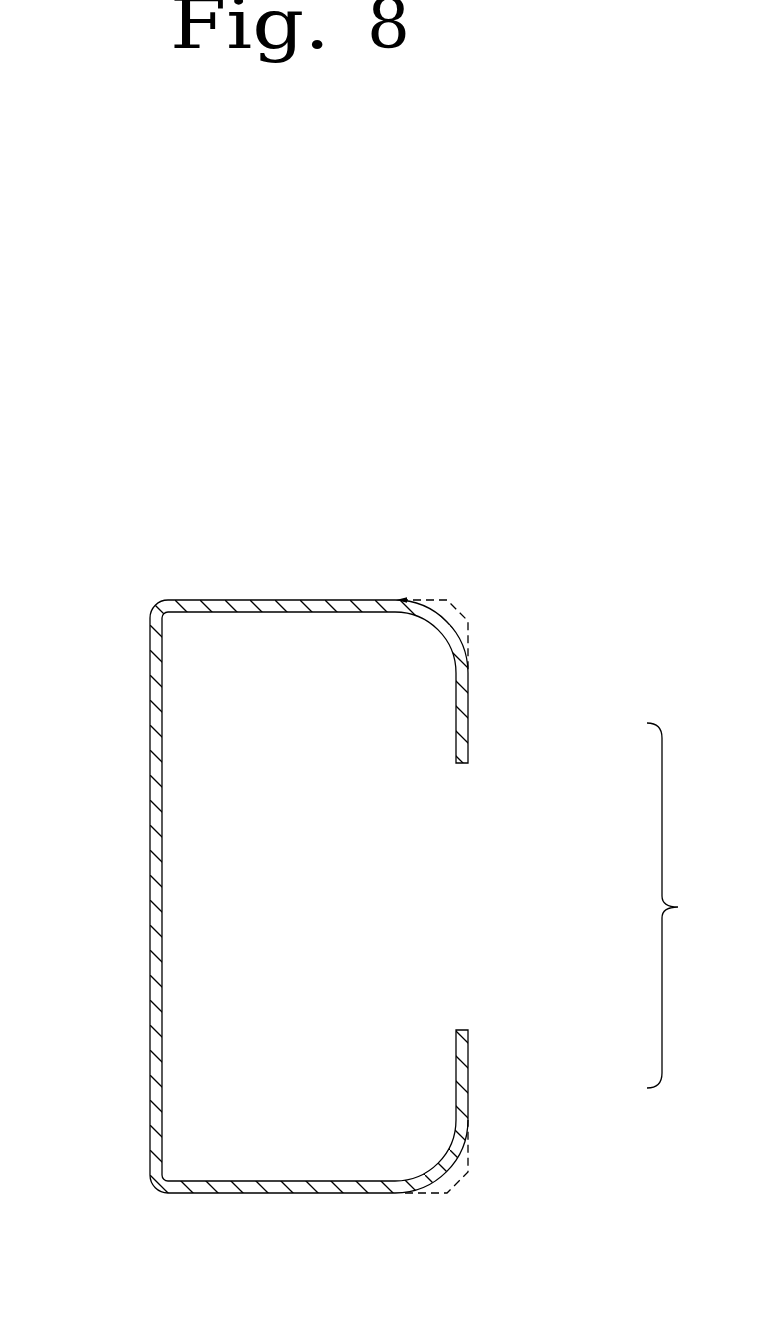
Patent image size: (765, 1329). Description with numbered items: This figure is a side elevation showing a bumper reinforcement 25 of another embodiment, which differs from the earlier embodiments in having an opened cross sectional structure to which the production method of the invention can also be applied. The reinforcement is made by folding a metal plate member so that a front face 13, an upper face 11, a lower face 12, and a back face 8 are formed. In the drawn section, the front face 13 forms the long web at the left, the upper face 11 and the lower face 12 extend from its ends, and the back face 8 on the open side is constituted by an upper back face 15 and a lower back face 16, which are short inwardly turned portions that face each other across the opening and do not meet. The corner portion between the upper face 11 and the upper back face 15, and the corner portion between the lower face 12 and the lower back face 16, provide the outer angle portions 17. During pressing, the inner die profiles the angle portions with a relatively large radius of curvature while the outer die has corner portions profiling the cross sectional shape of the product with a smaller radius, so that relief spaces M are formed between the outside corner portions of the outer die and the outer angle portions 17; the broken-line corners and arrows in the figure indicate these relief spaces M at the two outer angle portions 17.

The bumper reinforcement 25 is at (134, 641).
The upper face 11 is at (273, 600).
The lower face 12 is at (297, 1194).
The front face 13 is at (150, 918).
The upper back face 15 is at (469, 717).
The lower back face 16 is at (469, 1080).
The outer angle portion 17 is at (433, 623).
The back face 8 is at (677, 905).
The relief space M is at (468, 618).